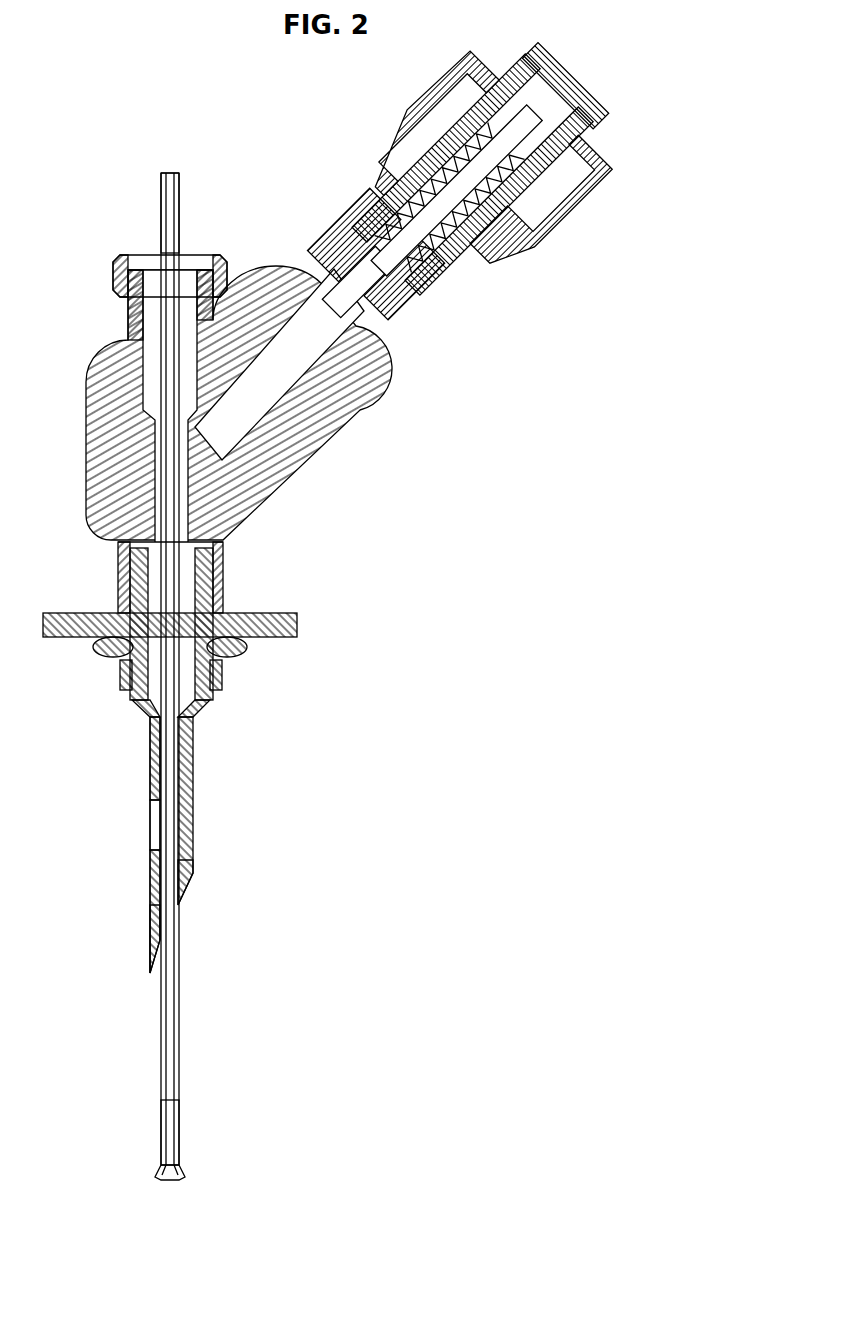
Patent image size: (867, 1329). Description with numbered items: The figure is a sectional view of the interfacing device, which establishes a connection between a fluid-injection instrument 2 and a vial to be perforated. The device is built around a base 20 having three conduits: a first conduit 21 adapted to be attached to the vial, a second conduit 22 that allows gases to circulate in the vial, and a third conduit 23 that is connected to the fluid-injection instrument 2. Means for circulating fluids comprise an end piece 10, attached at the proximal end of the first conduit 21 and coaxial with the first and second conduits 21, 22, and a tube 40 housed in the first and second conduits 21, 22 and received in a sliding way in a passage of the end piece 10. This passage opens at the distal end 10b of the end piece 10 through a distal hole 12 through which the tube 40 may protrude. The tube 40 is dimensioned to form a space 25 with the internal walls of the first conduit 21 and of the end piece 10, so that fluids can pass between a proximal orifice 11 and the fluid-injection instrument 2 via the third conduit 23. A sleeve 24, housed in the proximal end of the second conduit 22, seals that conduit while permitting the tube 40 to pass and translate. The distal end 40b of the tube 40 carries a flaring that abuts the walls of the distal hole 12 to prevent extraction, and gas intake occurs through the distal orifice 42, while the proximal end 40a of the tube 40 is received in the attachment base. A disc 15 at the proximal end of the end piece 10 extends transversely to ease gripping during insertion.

The fluid-injection instrument 2 is at (560, 270).
The end piece 10 is at (279, 765).
The distal end of the end piece 10b is at (158, 905).
The proximal orifice 11 is at (153, 820).
The distal hole 12 is at (178, 905).
The disc 15 is at (272, 636).
The base 20 is at (410, 505).
The first conduit 21 is at (205, 568).
The second conduit 22 is at (143, 318).
The third conduit 23 is at (283, 378).
The sleeve 24 is at (148, 362).
The space 25 is at (155, 758).
The tube 40 is at (187, 985).
The proximal end of the tube 40a is at (181, 183).
The distal end of the tube 40b is at (179, 1153).
The distal orifice 42 is at (166, 1178).